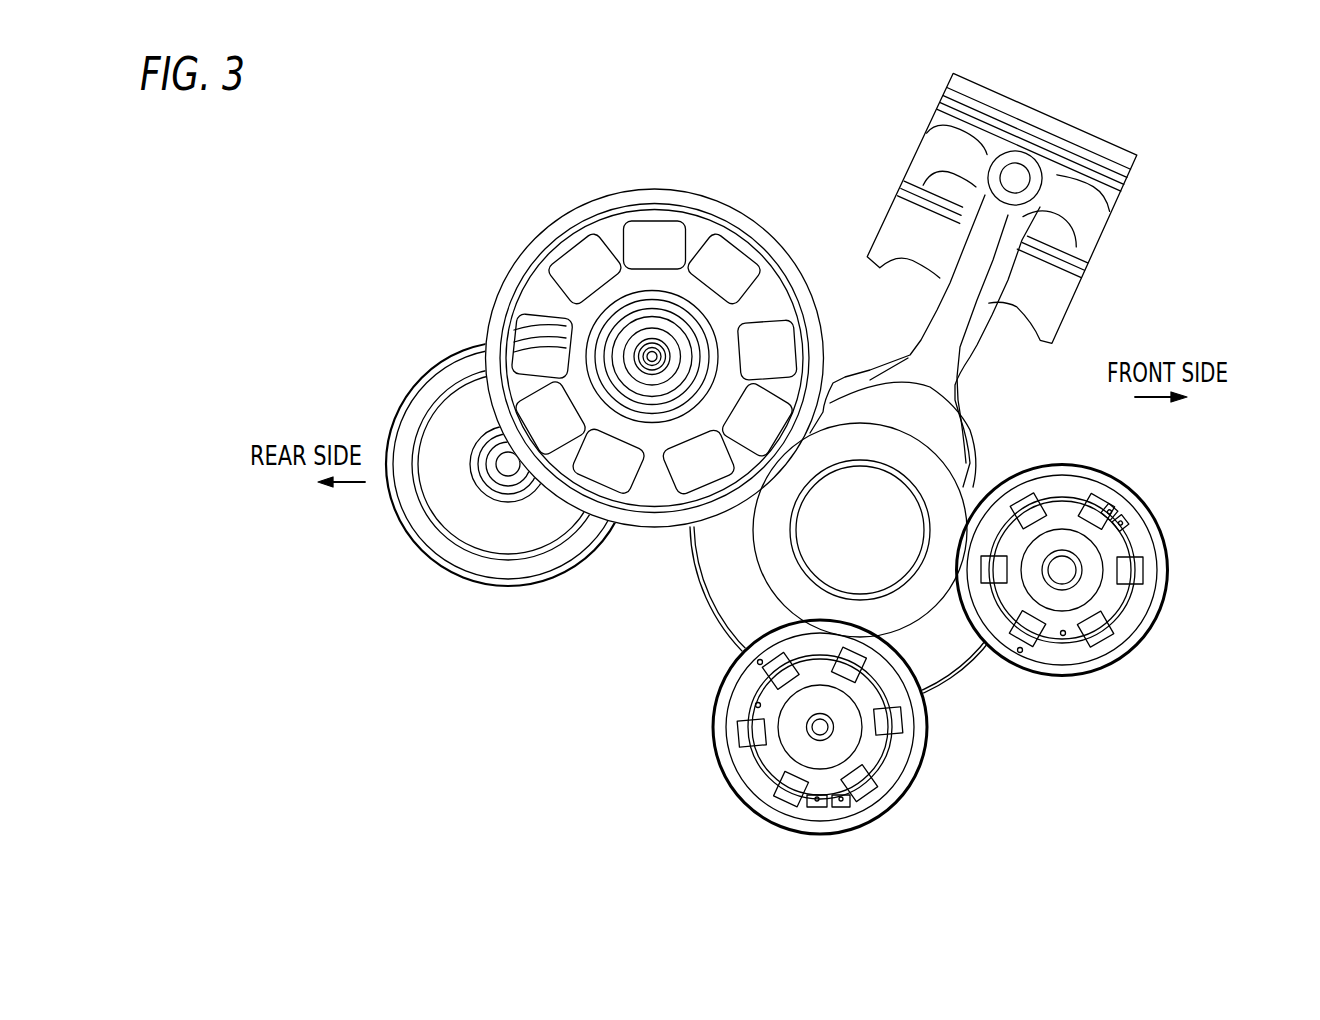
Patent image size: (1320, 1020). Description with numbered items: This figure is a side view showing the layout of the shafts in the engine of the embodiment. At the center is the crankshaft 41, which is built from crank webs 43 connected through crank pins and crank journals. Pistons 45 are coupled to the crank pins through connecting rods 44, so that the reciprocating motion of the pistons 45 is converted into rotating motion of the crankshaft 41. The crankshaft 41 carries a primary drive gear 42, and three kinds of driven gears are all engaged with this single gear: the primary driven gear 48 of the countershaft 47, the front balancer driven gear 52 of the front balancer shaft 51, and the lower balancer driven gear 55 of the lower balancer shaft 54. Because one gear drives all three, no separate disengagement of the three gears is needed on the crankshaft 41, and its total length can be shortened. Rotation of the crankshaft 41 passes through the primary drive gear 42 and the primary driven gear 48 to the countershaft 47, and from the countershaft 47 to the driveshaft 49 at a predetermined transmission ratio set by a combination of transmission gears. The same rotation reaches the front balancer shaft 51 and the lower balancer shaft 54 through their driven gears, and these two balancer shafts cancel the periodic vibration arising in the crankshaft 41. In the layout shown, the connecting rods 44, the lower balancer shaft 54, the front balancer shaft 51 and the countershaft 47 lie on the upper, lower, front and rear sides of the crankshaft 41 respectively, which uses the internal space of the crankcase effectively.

The crankshaft 41 is at (890, 493).
The primary drive gear 42 is at (757, 572).
The crank web 43 is at (947, 657).
The connecting rod 44 is at (898, 327).
The piston 45 is at (1103, 205).
The countershaft 47 is at (651, 333).
The primary driven gear 48 is at (655, 335).
The driveshaft 49 is at (497, 473).
The front balancer shaft 51 is at (1066, 545).
The front balancer driven gear 52 is at (1070, 551).
The lower balancer shaft 54 is at (848, 745).
The lower balancer driven gear 55 is at (848, 732).